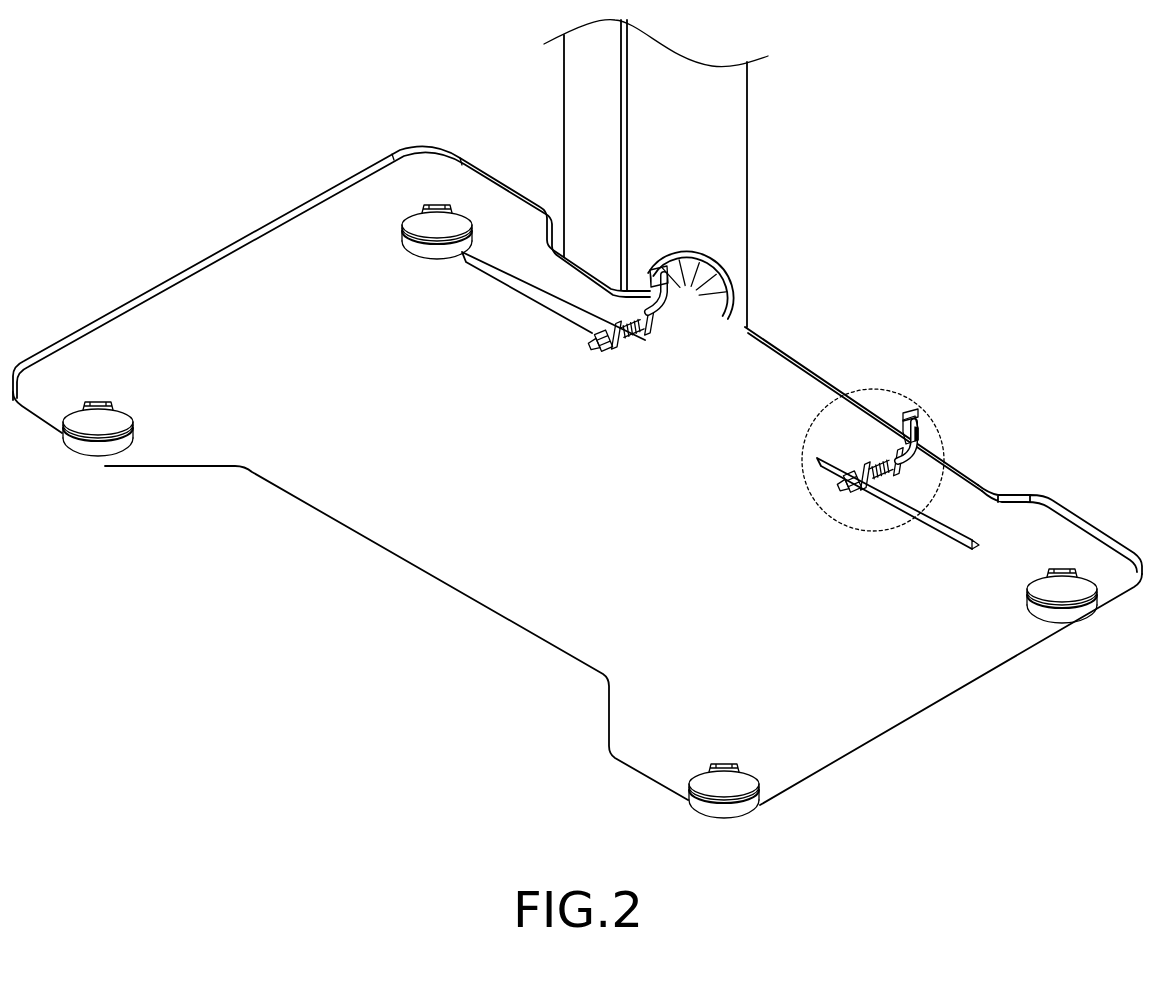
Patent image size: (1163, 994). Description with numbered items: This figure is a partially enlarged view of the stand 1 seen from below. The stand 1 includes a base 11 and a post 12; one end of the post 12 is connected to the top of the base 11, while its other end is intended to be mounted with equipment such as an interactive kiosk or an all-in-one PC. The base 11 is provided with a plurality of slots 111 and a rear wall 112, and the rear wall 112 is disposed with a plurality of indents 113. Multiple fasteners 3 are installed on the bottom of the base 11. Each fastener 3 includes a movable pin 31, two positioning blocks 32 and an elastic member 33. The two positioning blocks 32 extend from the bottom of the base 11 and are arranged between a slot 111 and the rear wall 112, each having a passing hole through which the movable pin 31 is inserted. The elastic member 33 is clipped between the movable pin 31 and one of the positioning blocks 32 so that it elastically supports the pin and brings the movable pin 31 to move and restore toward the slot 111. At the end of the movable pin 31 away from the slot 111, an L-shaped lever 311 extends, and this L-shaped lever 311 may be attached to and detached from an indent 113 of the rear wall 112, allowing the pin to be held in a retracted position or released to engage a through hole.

The stand 1 is at (577, 419).
The base 11 is at (515, 575).
The post 12 is at (740, 197).
The slot 111 is at (525, 292).
The rear wall 112 is at (766, 345).
The indent 113 is at (912, 412).
The fastener 3 is at (918, 473).
The movable pin 31 is at (949, 396).
The L-shaped lever 311 is at (916, 423).
The positioning block 32 is at (890, 445).
The elastic member 33 is at (873, 473).